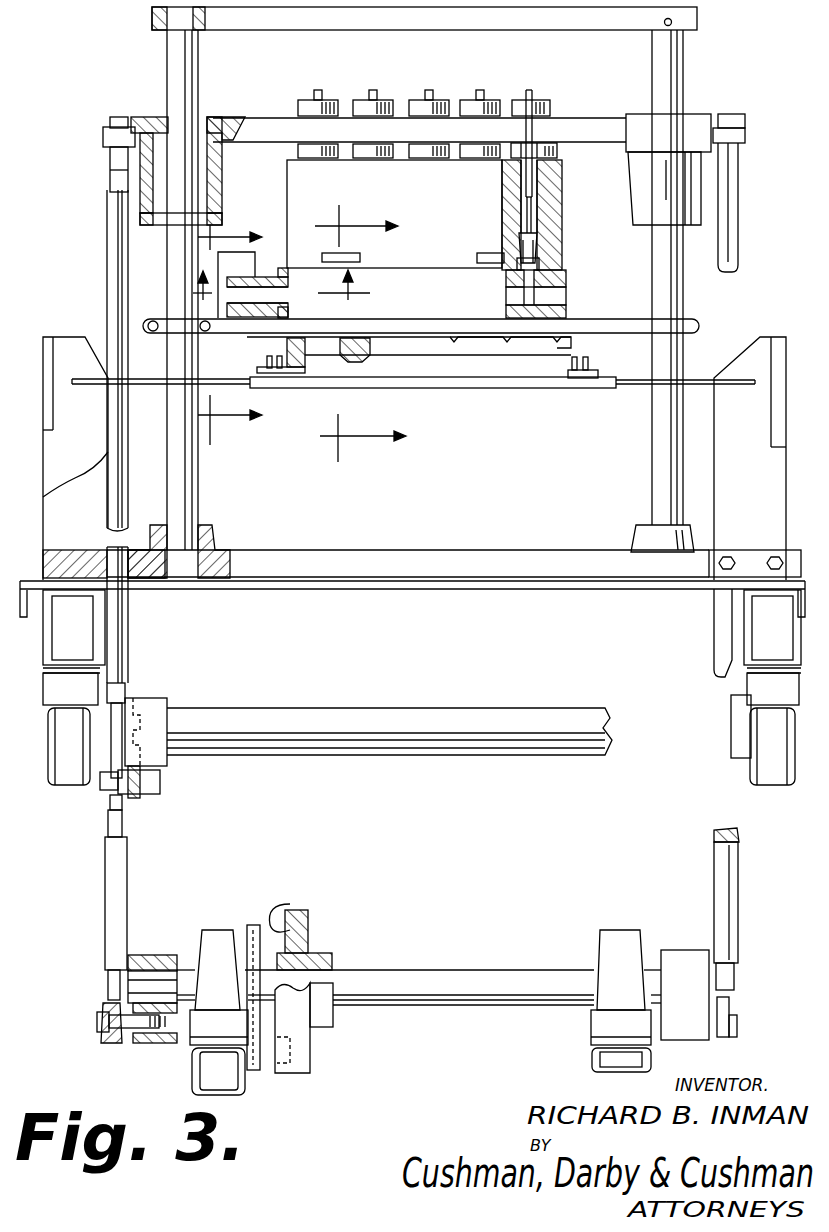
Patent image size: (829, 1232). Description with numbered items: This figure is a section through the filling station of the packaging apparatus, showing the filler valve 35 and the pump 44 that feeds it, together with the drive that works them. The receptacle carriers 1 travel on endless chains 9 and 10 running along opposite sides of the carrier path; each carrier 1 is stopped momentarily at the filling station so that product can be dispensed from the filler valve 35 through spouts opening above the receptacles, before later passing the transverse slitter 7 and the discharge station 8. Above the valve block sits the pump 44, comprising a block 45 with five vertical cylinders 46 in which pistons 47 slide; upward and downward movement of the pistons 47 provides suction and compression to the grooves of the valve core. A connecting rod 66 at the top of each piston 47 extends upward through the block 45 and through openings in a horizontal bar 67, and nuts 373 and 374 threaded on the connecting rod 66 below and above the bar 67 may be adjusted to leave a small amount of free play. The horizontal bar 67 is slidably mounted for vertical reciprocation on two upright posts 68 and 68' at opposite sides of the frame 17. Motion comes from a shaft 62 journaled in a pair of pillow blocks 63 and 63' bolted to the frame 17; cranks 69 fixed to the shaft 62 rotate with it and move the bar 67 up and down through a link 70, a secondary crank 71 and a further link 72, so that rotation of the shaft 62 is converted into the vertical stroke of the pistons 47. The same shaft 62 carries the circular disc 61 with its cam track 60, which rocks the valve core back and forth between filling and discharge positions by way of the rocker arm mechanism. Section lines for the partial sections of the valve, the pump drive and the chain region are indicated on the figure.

The carrier 1 is at (556, 350).
The transverse slitter 7 is at (361, 330).
The station 8 is at (235, 330).
The endless chain 9 is at (266, 362).
The endless chain 10 is at (590, 364).
The frame 17 is at (197, 1070).
The filler valve 35 is at (578, 286).
The pump 44 is at (559, 215).
The block 45 is at (551, 196).
The vertical cylinder 46 is at (539, 110).
The piston 47 is at (534, 258).
The cam track 60 is at (284, 900).
The circular disc 61 is at (310, 922).
The shaft 62 is at (378, 972).
The pillow block 63 is at (219, 966).
The pillow block 63' is at (650, 982).
The connecting rod 66 is at (532, 92).
The horizontal bar 67 is at (262, 130).
The upright post 68 is at (207, 290).
The upright post 68' is at (687, 291).
The crank 69 is at (160, 952).
The link 70 is at (117, 871).
The secondary crank 71 is at (153, 707).
The link 72 is at (107, 311).
The nut 373 is at (511, 150).
The nut 374 is at (549, 97).